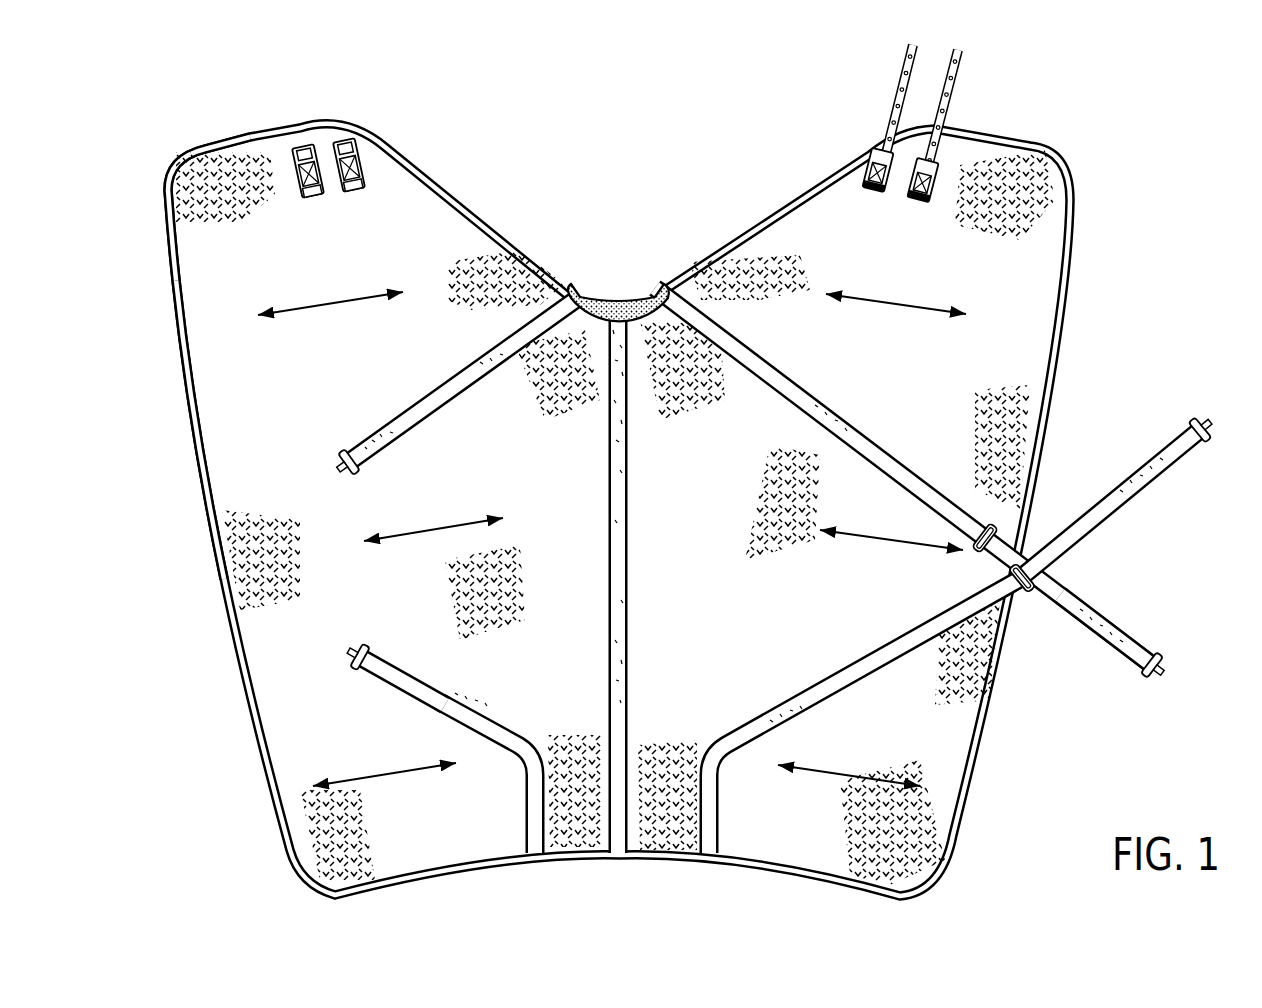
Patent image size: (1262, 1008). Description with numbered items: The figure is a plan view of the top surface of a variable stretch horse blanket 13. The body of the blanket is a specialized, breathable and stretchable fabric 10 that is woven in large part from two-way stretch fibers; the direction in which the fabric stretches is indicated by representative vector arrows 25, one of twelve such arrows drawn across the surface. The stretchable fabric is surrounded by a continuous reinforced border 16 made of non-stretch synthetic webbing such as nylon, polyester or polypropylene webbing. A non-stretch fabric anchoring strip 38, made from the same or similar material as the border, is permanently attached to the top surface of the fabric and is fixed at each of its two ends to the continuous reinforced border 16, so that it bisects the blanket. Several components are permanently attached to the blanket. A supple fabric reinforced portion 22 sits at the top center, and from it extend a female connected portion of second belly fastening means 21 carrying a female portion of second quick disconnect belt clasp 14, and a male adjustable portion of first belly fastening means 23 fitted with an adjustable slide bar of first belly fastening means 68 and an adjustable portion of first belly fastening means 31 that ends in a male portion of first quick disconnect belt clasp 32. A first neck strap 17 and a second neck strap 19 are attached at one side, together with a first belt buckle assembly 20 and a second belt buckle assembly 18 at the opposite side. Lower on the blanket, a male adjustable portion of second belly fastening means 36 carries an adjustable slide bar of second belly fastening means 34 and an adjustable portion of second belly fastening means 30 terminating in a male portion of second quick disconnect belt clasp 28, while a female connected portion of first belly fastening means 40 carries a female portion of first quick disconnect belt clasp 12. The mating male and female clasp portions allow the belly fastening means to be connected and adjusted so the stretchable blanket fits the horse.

The specialized, breathable and stretchable fabric 10 is at (278, 738).
The female portion of first quick disconnect belt clasp 12 is at (348, 657).
The variable stretch horse blanket 13 is at (172, 152).
The female portion of second quick disconnect belt clasp 14 is at (339, 463).
The continuous reinforced border 16 is at (190, 406).
The first neck strap 17 is at (912, 48).
The second belt buckle assembly 18 is at (298, 172).
The second neck strap 19 is at (958, 52).
The first belt buckle assembly 20 is at (356, 168).
The female connected portion of second belly fastening means 21 is at (567, 290).
The supple fabric reinforced portion 22 is at (617, 296).
The male adjustable portion of first belly fastening means 23 is at (670, 290).
The representative vector arrows 25 is at (362, 538).
The male portion of second quick disconnect belt clasp 28 is at (1208, 427).
The adjustable portion of second belly fastening means 30 is at (1172, 446).
The adjustable portion of first belly fastening means 31 is at (1128, 642).
The male portion of first quick disconnect belt clasp 32 is at (1165, 674).
The adjustable slide bar of second belly fastening means 34 is at (1026, 588).
The male adjustable portion of second belly fastening means 36 is at (707, 860).
The non-stretch fabric anchoring strip 38 is at (619, 858).
The female connected portion of first belly fastening means 40 is at (538, 860).
The adjustable slide bar of first belly fastening means 68 is at (998, 528).